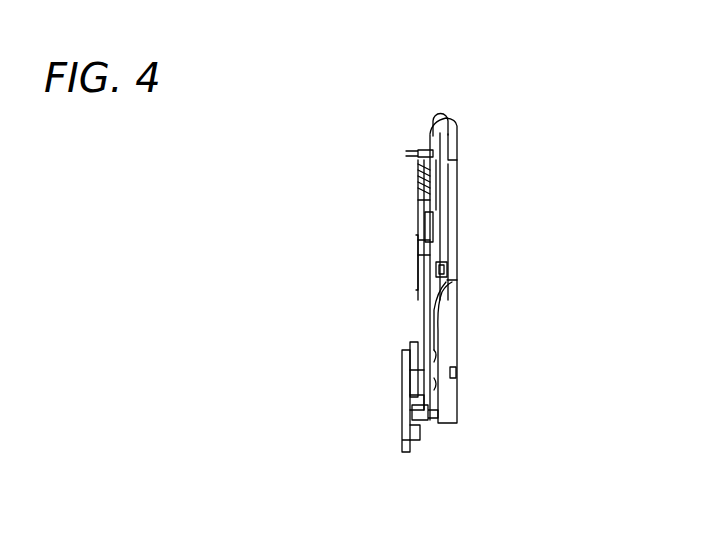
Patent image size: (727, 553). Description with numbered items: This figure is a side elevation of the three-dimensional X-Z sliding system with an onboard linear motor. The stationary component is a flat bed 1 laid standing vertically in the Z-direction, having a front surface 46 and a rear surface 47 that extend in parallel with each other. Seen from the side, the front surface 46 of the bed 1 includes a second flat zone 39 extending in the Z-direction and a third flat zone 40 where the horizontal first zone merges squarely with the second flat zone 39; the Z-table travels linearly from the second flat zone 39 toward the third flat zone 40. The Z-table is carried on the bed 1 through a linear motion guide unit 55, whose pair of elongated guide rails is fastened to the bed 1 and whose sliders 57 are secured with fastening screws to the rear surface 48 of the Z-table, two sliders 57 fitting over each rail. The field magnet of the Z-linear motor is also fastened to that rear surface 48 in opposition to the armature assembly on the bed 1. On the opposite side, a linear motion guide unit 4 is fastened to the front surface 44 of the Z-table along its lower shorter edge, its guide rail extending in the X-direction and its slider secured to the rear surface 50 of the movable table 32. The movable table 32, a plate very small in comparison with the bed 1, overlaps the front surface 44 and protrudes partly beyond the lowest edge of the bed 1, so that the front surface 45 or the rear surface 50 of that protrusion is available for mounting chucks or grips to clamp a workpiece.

The flat bed 1 is at (451, 337).
The linear motion guide unit 4 is at (418, 420).
The movable table 32 is at (403, 428).
The second flat zone 39 is at (430, 194).
The third flat zone 40 is at (437, 358).
The front surface of the Z-table 44 is at (418, 272).
The front surface of the protrusion 45 is at (395, 408).
The front surface of the flat bed 46 is at (436, 386).
The rear surface of the flat bed 47 is at (458, 278).
The rear surface of the Z-table 48 is at (436, 259).
The rear surface of the movable table 50 is at (418, 443).
The linear motion guide unit 55 is at (436, 218).
The sliders 57 is at (434, 228).